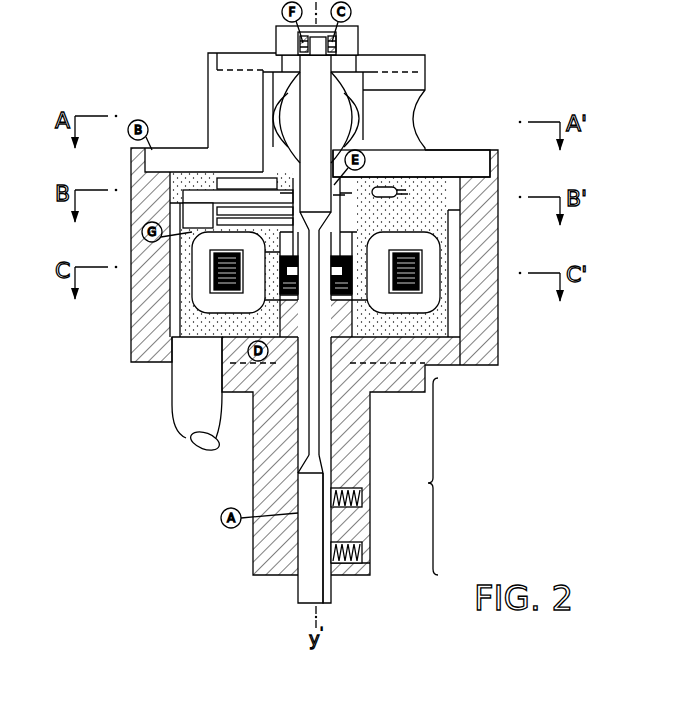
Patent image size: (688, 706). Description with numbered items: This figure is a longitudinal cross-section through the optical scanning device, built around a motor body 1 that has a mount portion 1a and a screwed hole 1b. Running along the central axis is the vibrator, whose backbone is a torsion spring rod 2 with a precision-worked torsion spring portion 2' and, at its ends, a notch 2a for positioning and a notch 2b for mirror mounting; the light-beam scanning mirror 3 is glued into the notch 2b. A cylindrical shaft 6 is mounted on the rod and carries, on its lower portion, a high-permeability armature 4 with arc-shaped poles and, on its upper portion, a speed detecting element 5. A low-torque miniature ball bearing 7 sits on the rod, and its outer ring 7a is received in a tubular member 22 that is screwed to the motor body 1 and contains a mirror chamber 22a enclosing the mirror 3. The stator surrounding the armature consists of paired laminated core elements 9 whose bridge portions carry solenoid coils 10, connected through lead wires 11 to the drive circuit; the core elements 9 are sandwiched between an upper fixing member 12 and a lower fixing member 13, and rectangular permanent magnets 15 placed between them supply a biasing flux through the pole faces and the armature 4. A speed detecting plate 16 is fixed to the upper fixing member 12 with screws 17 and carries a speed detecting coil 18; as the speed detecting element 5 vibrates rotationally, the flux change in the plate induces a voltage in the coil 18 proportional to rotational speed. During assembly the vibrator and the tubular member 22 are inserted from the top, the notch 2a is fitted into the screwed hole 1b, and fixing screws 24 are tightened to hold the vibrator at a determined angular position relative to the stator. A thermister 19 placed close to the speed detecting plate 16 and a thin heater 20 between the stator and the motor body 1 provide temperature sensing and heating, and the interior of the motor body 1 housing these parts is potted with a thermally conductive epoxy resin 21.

The motor body 1 is at (262, 552).
The mount portion 1a is at (448, 476).
The screwed hole 1b is at (347, 570).
The torsion spring rod 2 is at (297, 329).
The torsion spring portion 2' is at (334, 342).
The notch for positioning 2a is at (328, 522).
The notch for mirror mounting 2b is at (331, 112).
The mirror 3 is at (347, 132).
The armature 4 is at (350, 272).
The speed detecting element 5 is at (355, 178).
The cylindrical shaft 6 is at (333, 222).
The ball bearing 7 is at (336, 44).
The outer ring 7a is at (298, 44).
The core elements 9 is at (212, 265).
The solenoid coils 10 is at (200, 302).
The lead wires 11 is at (180, 407).
The upper fixing member 12 is at (273, 240).
The lower fixing member 13 is at (273, 312).
The permanent magnets 15 is at (280, 293).
The speed detecting plate 16 is at (197, 195).
The screws 17 is at (273, 213).
The speed detecting coil 18 is at (228, 183).
The thermister 19 is at (386, 194).
The heater 20 is at (175, 280).
The epoxy resin 21 is at (392, 330).
The tubular member 22 is at (214, 56).
The mirror chamber 22a is at (272, 80).
The fixing screws 24 is at (360, 492).